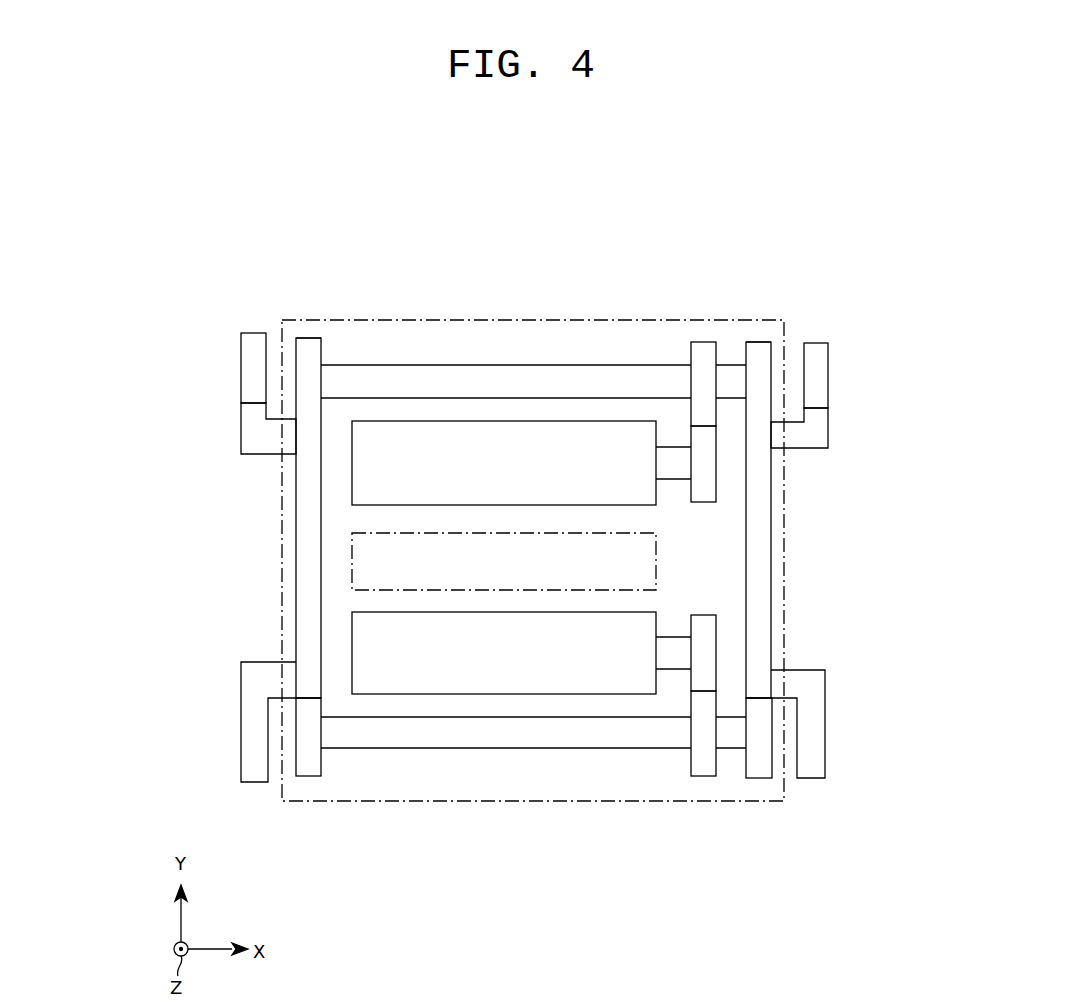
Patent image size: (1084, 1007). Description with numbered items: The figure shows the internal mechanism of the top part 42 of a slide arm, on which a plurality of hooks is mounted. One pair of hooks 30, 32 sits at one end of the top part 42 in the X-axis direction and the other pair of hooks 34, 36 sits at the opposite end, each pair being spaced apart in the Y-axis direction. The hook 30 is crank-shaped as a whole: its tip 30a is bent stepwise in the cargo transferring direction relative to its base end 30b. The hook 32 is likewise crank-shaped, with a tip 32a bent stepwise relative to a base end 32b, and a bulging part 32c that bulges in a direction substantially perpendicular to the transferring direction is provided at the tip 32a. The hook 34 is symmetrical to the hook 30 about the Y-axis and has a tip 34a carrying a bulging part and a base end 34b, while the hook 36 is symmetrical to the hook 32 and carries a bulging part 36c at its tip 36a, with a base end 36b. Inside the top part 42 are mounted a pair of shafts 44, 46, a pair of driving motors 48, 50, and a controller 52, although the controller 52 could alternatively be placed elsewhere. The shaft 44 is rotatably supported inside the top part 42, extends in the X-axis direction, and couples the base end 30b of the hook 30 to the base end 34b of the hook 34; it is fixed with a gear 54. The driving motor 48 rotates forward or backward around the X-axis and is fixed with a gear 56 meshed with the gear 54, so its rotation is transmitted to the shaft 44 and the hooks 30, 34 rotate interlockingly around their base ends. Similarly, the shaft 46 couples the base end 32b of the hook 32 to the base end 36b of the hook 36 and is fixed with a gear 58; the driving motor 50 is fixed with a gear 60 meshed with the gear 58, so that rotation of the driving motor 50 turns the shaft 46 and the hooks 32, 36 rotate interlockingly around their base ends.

The hook 30 is at (760, 540).
The tip of the hook 30a is at (815, 715).
The base end of the hook 30b is at (762, 355).
The hook 32 is at (762, 750).
The tip of the hook 32a is at (825, 437).
The base end of the hook 32b is at (762, 770).
The bulging part 32c is at (825, 373).
The hook 34 is at (310, 570).
The tip of the hook 34a is at (255, 732).
The base end of the hook 34b is at (307, 352).
The hook 36 is at (305, 758).
The tip of the hook 36a is at (254, 430).
The base end of the hook 36b is at (310, 770).
The bulging part 36c is at (254, 377).
The top part 42 is at (725, 319).
The shaft 44 is at (512, 382).
The shaft 46 is at (512, 735).
The driving motor 48 is at (587, 440).
The driving motor 50 is at (588, 680).
The controller 52 is at (657, 573).
The gear 54 is at (698, 350).
The gear 56 is at (703, 486).
The gear 58 is at (702, 770).
The gear 60 is at (705, 643).